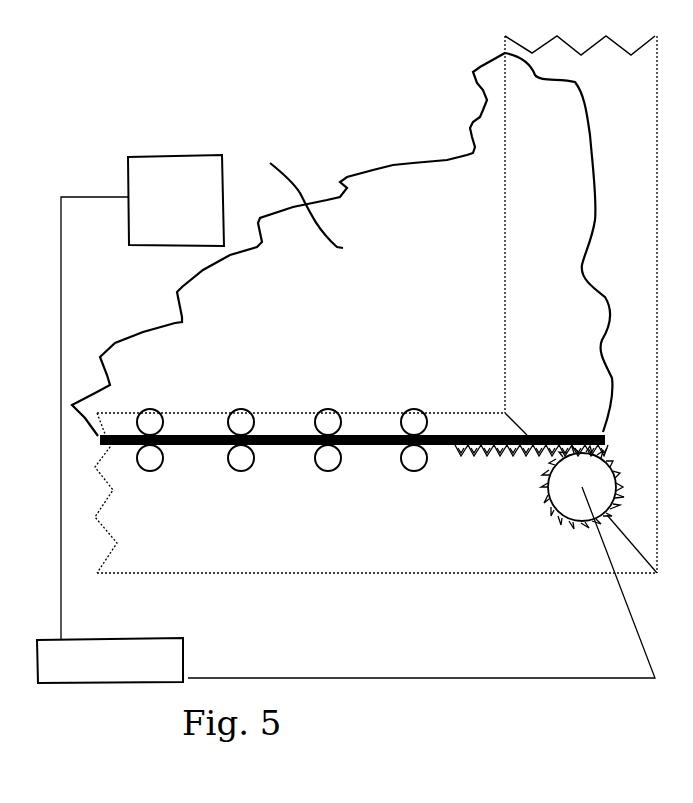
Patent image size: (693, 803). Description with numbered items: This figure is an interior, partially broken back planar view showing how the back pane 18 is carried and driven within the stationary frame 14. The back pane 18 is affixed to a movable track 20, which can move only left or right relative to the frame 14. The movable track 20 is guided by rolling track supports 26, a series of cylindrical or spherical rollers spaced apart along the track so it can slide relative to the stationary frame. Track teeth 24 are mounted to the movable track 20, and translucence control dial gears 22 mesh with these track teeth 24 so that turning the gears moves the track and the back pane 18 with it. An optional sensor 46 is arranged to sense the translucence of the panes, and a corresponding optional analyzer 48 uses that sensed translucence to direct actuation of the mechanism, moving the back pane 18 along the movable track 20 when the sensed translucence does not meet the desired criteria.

The frame 14 is at (4, 152).
The back pane 18 is at (293, 200).
The movable track 20 is at (203, 448).
The translucence control dial gears 22 is at (553, 518).
The track teeth 24 is at (546, 430).
The rolling track supports 26 is at (386, 427).
The sensor 46 is at (176, 200).
The analyzer 48 is at (110, 660).